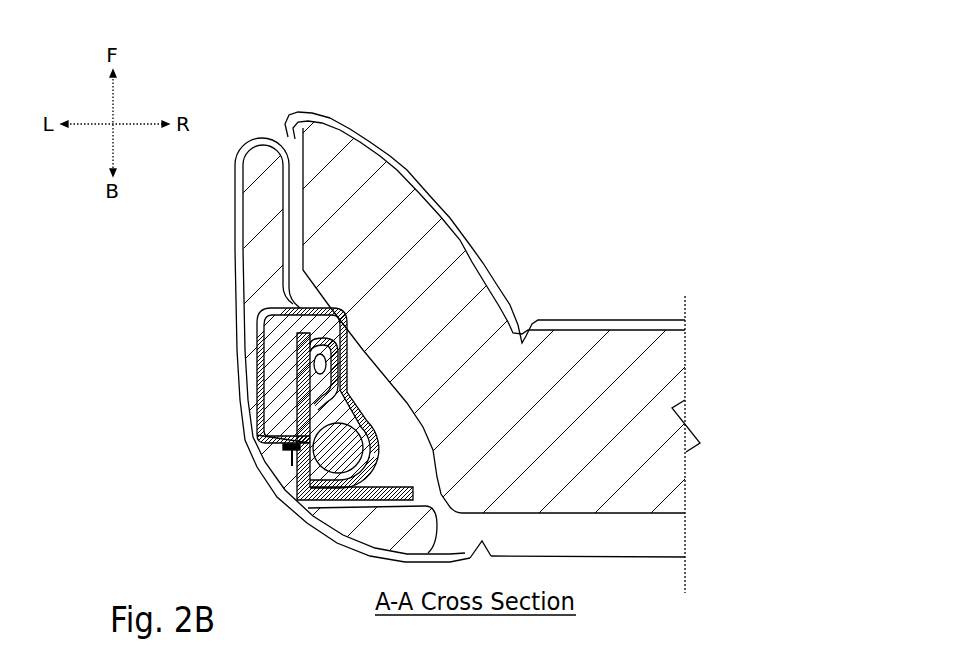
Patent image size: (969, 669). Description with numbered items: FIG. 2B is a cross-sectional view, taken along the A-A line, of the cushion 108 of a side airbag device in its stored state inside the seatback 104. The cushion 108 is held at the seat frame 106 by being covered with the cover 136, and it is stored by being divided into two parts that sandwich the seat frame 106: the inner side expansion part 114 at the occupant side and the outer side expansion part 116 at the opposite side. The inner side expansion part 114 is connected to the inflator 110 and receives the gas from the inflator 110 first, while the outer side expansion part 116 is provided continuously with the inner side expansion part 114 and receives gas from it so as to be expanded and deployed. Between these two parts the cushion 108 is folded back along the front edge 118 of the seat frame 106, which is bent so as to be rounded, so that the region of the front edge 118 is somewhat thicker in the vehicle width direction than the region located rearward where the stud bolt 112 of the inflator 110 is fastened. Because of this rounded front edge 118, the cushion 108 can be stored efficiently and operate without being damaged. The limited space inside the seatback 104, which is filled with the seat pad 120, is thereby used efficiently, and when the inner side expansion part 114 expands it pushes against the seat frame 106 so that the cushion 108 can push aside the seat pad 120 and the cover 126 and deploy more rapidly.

The seatback 104 is at (617, 560).
The seat frame 106 is at (280, 500).
The cushion 108 is at (288, 294).
The inflator 110 is at (331, 552).
The stud bolt 112 is at (297, 494).
The inner side expansion part 114 is at (485, 283).
The outer side expansion part 116 is at (300, 360).
The front edge 118 is at (310, 343).
The seat pad 120 is at (417, 181).
The cover 126 is at (330, 115).
The cover 136 is at (283, 447).